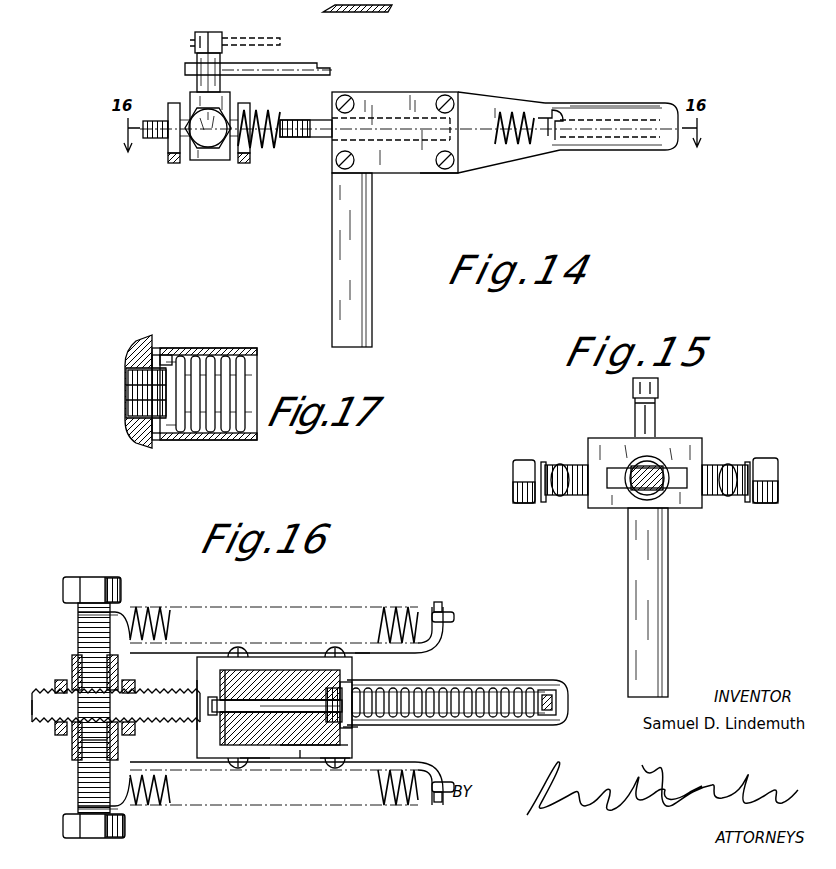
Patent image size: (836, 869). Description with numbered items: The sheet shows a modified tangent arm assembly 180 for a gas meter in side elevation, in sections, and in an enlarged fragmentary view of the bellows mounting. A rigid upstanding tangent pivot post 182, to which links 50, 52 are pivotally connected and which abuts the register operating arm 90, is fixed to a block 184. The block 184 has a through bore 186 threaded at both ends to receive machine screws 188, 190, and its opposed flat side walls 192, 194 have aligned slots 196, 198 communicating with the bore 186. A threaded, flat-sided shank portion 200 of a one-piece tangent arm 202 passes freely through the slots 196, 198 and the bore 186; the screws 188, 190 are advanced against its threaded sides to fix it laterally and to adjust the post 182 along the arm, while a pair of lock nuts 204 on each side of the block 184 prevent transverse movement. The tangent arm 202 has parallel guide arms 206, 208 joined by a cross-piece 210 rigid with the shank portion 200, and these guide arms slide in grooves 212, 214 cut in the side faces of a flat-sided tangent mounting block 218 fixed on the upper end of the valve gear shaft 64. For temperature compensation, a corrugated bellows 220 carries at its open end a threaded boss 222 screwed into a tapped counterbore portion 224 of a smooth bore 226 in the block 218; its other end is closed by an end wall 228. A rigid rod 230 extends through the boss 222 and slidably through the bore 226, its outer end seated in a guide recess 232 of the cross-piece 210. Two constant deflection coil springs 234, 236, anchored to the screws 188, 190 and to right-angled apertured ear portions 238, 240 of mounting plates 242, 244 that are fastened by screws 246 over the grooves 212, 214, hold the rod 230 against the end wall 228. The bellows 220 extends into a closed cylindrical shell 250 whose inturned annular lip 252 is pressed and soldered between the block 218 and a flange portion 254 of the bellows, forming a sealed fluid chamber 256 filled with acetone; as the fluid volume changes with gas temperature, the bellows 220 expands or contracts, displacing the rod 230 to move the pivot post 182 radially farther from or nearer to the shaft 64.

In FIG. 14, the link 50 is at (298, 64).
In FIG. 14, the link 52 is at (327, 72).
In FIG. 14, the valve gear shaft 64 is at (366, 207).
In FIG. 15, the valve gear shaft 64 is at (638, 590).
In FIG. 14, the register operating arm 90 is at (253, 38).
In FIG. 14, the tangent arm assembly 180 is at (182, 62).
In FIG. 14, the tangent pivot post 182 is at (206, 35).
In FIG. 15, the tangent pivot post 182 is at (660, 391).
In FIG. 14, the block 184 is at (219, 160).
In FIG. 15, the block 184 is at (589, 445).
In FIG. 16, the block 184 is at (74, 660).
In FIG. 16, the through bore 186 is at (84, 775).
In FIG. 15, the machine screw 188 is at (515, 478).
In FIG. 16, the machine screw 188 is at (95, 582).
In FIG. 14, the machine screw 190 is at (207, 140).
In FIG. 15, the machine screw 190 is at (772, 497).
In FIG. 16, the machine screw 190 is at (125, 825).
In FIG. 16, the flat side wall 192 is at (75, 760).
In FIG. 16, the flat side wall 194 is at (118, 748).
In FIG. 15, the slot 196 is at (612, 480).
In FIG. 16, the slot 196 is at (72, 745).
In FIG. 16, the slot 198 is at (116, 660).
In FIG. 14, the shank portion 200 is at (152, 140).
In FIG. 15, the shank portion 200 is at (665, 485).
In FIG. 16, the shank portion 200 is at (38, 712).
In FIG. 14, the tangent arm 202 is at (297, 148).
In FIG. 16, the tangent arm 202 is at (213, 648).
In FIG. 14, the lock nuts 204 is at (173, 165).
In FIG. 15, the lock nuts 204 is at (656, 465).
In FIG. 16, the lock nuts 204 is at (58, 680).
In FIG. 16, the guide arm 206 is at (285, 665).
In FIG. 14, the guide arm 208 is at (340, 130).
In FIG. 16, the guide arm 208 is at (296, 760).
In FIG. 16, the cross-piece 210 is at (206, 687).
In FIG. 16, the groove 212 is at (347, 680).
In FIG. 16, the groove 214 is at (272, 727).
In FIG. 17, the tangent mounting block 218 is at (128, 430).
In FIG. 16, the tangent mounting block 218 is at (328, 765).
In FIG. 17, the bellows 220 is at (222, 422).
In FIG. 16, the bellows 220 is at (470, 687).
In FIG. 17, the boss 222 is at (128, 380).
In FIG. 16, the boss 222 is at (362, 692).
In FIG. 17, the counterbore portion 224 is at (126, 406).
In FIG. 16, the counterbore portion 224 is at (336, 699).
In FIG. 16, the bore 226 is at (258, 700).
In FIG. 16, the end wall 228 is at (560, 705).
In FIG. 16, the rod 230 is at (288, 703).
In FIG. 16, the guide recess 232 is at (208, 706).
In FIG. 15, the coil spring 234 is at (543, 462).
In FIG. 16, the coil spring 234 is at (408, 612).
In FIG. 14, the coil spring 236 is at (272, 120).
In FIG. 15, the coil spring 236 is at (748, 462).
In FIG. 16, the coil spring 236 is at (415, 805).
In FIG. 16, the ear portion 238 is at (452, 614).
In FIG. 14, the ear portion 240 is at (556, 142).
In FIG. 16, the ear portion 240 is at (447, 800).
In FIG. 16, the mounting plate 242 is at (362, 652).
In FIG. 14, the mounting plate 244 is at (425, 173).
In FIG. 16, the mounting plate 244 is at (262, 762).
In FIG. 14, the screws 246 is at (350, 98).
In FIG. 16, the screws 246 is at (239, 648).
In FIG. 17, the shell 250 is at (233, 348).
In FIG. 16, the shell 250 is at (562, 682).
In FIG. 17, the annular lip 252 is at (158, 441).
In FIG. 16, the annular lip 252 is at (340, 724).
In FIG. 17, the flange portion 254 is at (170, 353).
In FIG. 16, the flange portion 254 is at (352, 720).
In FIG. 16, the fluid chamber 256 is at (566, 690).